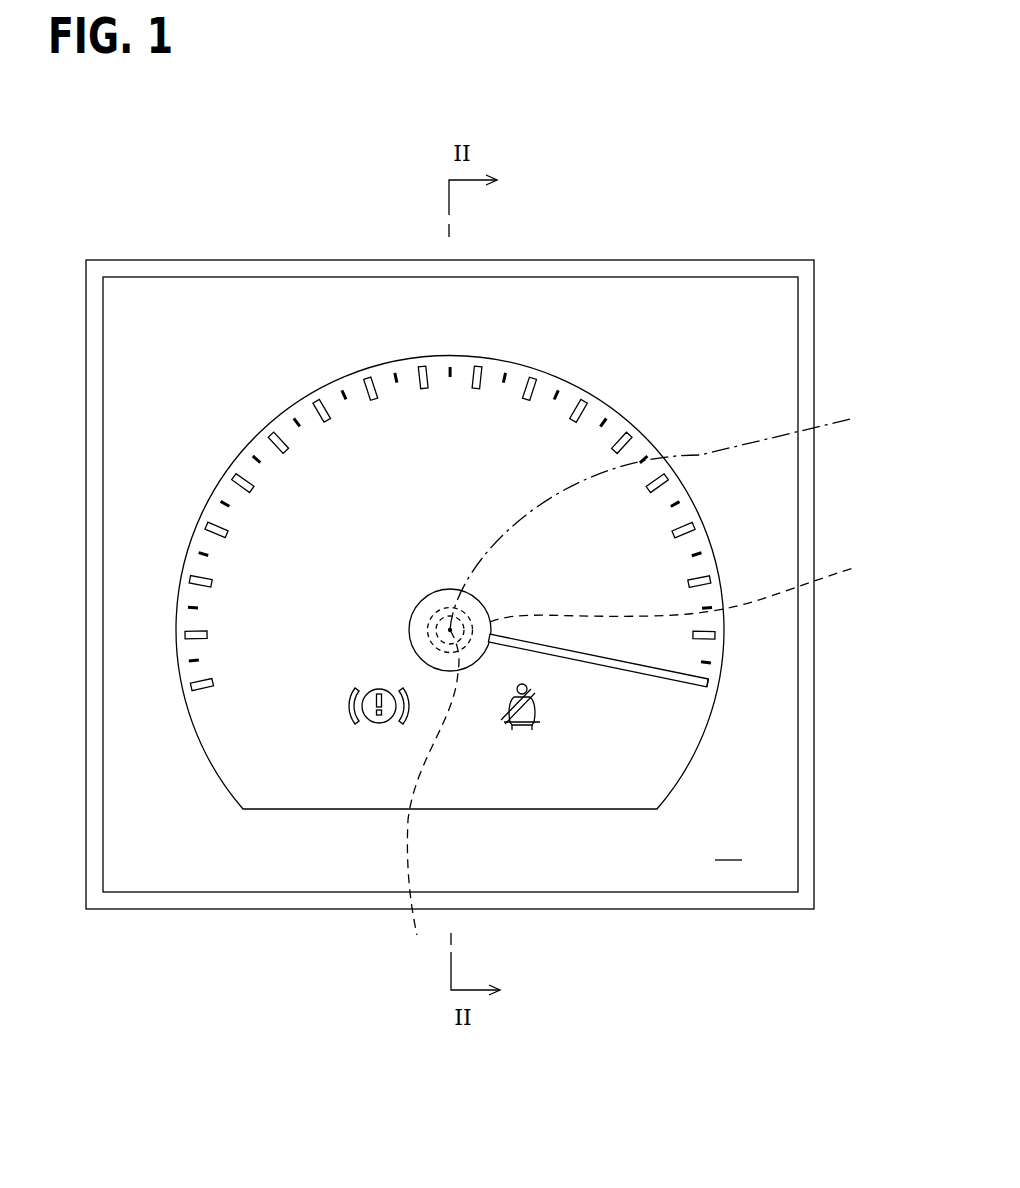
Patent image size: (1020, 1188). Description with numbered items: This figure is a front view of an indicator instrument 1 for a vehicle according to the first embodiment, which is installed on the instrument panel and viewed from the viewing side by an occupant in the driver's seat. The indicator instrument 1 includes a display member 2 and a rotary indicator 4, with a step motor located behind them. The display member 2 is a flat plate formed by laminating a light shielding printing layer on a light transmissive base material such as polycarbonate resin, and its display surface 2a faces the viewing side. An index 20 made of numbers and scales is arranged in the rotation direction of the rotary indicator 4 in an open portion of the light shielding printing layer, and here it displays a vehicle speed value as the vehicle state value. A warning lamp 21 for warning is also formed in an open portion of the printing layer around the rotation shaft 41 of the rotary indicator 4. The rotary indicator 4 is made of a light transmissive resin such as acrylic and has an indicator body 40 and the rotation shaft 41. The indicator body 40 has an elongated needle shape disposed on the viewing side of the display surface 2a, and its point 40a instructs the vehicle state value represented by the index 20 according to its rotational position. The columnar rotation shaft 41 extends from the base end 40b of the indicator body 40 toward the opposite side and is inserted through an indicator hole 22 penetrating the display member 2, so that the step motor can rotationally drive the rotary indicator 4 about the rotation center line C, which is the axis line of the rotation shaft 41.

The indicator instrument 1 is at (100, 196).
The display member 2 is at (765, 334).
The display surface 2a is at (727, 847).
The index 20 is at (276, 438).
The warning lamp 21 is at (372, 713).
The indicator hole 22 is at (429, 797).
The rotary indicator 4 is at (662, 754).
The indicator body 40 is at (603, 657).
The point 40a is at (708, 683).
The base end 40b is at (468, 650).
The rotation shaft 41 is at (688, 585).
The rotation center line C is at (661, 519).